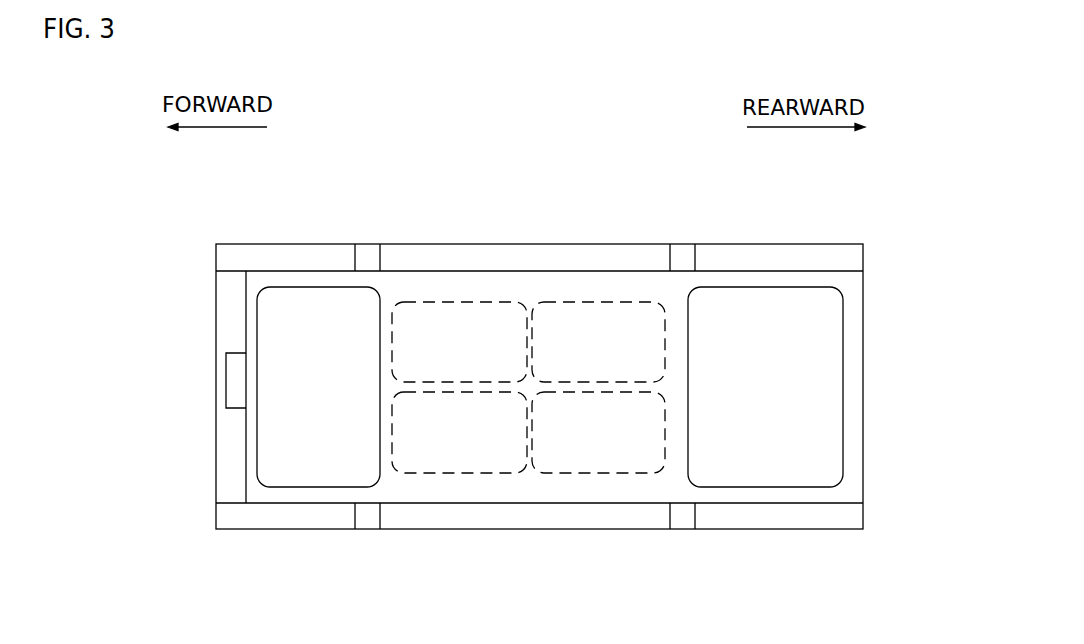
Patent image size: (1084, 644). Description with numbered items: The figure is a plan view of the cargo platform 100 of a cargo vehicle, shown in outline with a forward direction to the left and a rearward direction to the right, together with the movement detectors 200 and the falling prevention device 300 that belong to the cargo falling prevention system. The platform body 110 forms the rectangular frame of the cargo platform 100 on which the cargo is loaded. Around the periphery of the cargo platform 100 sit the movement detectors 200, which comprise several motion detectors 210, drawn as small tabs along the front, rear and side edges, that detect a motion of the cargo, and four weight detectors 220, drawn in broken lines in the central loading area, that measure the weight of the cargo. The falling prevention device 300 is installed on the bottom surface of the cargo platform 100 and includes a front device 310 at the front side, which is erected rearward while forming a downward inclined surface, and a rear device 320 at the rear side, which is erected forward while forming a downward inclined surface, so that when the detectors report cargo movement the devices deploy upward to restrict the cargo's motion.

The cargo platform 100 is at (457, 222).
The housing 110 is at (850, 362).
The movement detectors 200 is at (402, 386).
The motion detector 210 is at (368, 255).
The weight detector 220 is at (568, 313).
The falling prevention device 300 is at (542, 455).
The front device 310 is at (285, 486).
The rear device 320 is at (803, 487).